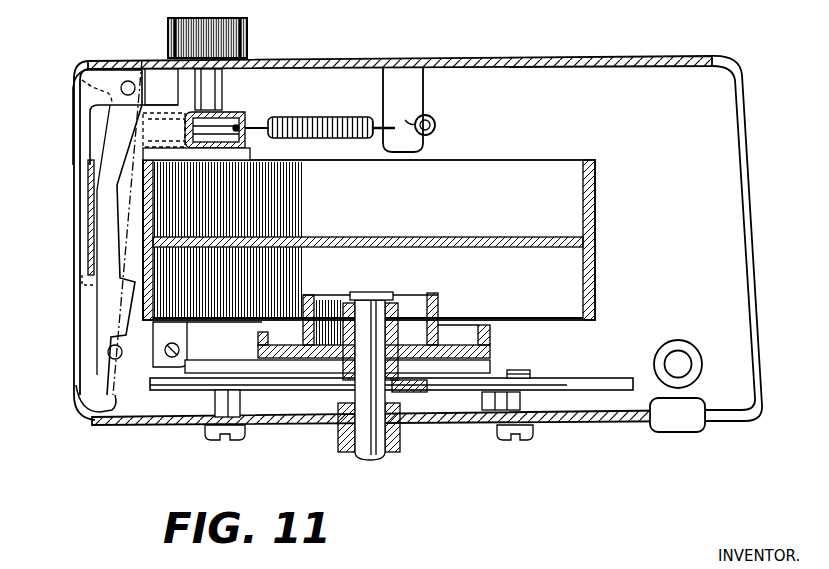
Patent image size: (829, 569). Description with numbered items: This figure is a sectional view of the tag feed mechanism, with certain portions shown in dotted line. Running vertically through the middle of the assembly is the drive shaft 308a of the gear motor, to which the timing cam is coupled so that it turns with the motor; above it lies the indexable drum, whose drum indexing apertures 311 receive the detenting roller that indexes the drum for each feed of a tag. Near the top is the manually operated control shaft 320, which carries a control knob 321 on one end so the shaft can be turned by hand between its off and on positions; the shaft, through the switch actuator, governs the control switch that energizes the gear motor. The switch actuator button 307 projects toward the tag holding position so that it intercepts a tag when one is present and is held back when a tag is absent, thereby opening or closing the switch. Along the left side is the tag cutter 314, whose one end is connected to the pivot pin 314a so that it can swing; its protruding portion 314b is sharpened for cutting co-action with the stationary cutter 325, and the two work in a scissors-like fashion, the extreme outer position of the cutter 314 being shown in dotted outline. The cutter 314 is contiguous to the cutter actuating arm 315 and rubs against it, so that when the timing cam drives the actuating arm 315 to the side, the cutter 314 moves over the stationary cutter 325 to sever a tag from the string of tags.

The pivot pin 314a is at (133, 81).
The control knob 321 is at (247, 40).
The control shaft 320 is at (228, 108).
The protruding portion 314b is at (110, 190).
The tag cutter 314 is at (100, 213).
The stationary cutter 325 is at (88, 278).
The drum indexing aperture 311 is at (596, 220).
The switch actuator button 307 is at (487, 360).
The cutter actuating arm 315 is at (625, 347).
The drive shaft 308a is at (362, 436).